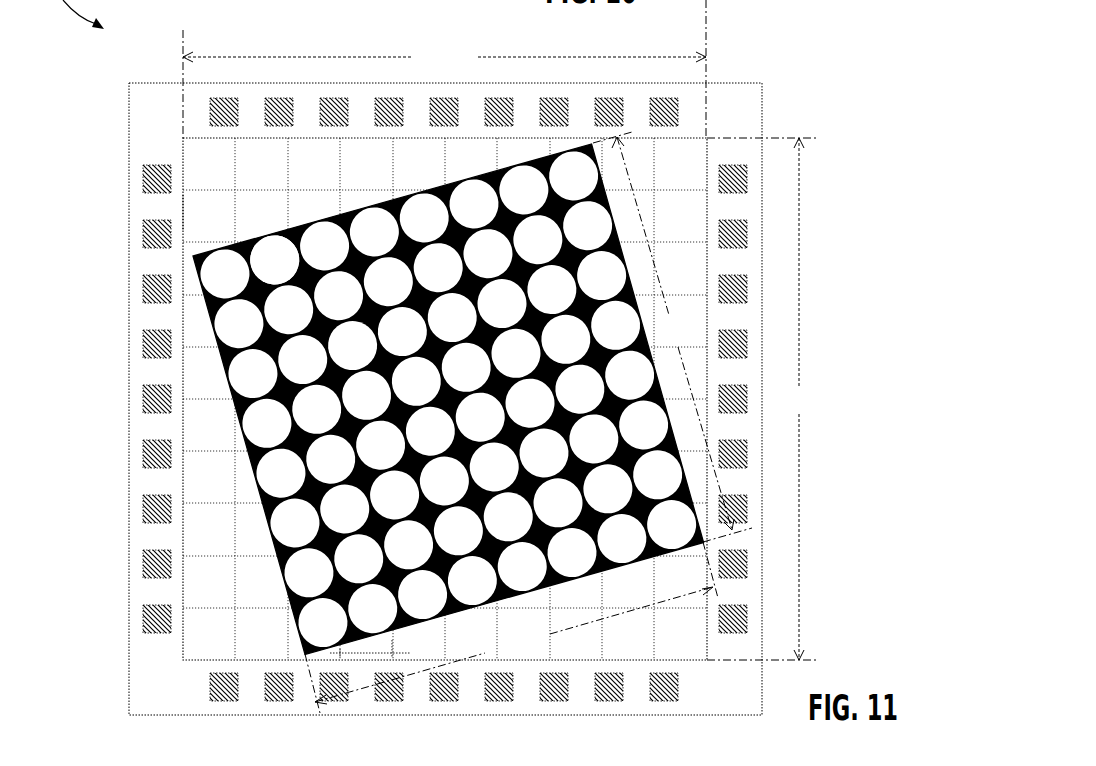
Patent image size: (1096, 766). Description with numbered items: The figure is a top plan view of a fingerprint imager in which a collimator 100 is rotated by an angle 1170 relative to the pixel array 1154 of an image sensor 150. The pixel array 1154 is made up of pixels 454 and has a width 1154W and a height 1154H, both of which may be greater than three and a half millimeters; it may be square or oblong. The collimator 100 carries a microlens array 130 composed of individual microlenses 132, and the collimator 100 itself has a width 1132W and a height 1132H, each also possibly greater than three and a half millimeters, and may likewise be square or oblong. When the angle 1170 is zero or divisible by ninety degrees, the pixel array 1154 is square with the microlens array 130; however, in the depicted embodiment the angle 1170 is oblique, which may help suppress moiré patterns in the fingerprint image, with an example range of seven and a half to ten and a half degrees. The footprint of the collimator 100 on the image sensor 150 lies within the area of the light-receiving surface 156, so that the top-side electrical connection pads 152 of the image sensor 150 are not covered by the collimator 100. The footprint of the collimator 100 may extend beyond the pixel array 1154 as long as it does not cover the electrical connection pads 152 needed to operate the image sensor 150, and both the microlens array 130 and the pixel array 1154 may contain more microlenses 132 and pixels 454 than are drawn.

The collimator 100 is at (392, 197).
The microlens array 130 is at (306, 207).
The microlens 132 is at (267, 248).
The image sensor 150 is at (128, 232).
The electrical connection pads 152 is at (150, 343).
The light-receiving surface 156 is at (197, 468).
The pixels 454 is at (193, 213).
The pixel array 1154 is at (163, 139).
The width of pixel array 1154W is at (444, 69).
The height of pixel array 1154H is at (767, 399).
The height of collimator 1132H is at (672, 337).
The width of collimator 1132W is at (511, 627).
The angle 1170 is at (394, 650).